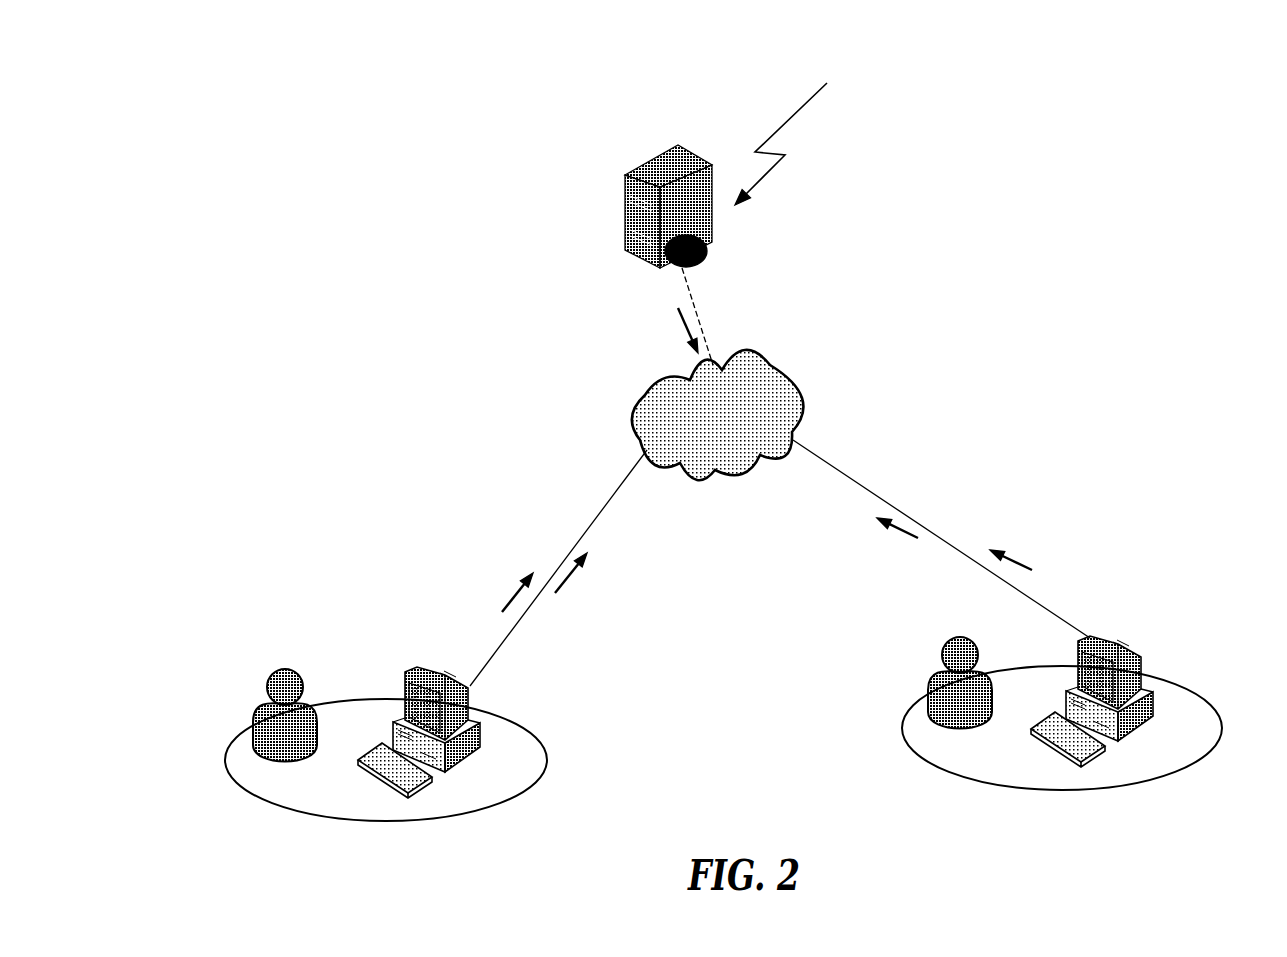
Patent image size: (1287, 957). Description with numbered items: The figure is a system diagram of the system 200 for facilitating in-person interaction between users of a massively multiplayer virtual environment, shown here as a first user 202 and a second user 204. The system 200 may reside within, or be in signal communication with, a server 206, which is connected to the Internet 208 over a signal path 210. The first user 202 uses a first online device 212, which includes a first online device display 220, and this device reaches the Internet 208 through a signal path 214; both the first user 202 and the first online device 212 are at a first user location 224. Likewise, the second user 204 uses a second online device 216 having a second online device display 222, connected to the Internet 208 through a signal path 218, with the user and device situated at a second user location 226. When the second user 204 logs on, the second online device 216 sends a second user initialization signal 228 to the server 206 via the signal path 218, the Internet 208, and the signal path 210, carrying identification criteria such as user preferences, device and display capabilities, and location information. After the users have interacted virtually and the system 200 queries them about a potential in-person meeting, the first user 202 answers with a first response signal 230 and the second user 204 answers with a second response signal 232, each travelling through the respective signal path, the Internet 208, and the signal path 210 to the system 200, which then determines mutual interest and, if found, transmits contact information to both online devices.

The system 200 is at (791, 133).
The first user 202 is at (272, 671).
The second user 204 is at (990, 728).
The server 206 is at (693, 148).
The Internet 208 is at (718, 415).
The signal path 210 is at (697, 289).
The first online device 212 is at (388, 646).
The signal path 214 is at (615, 492).
The second online device 216 is at (1145, 704).
The signal path 218 is at (855, 483).
The first online device display 220 is at (400, 711).
The second online device display 222 is at (1168, 738).
The first user location 224 is at (513, 597).
The second user location 226 is at (1015, 556).
The second user initialization signal 228 is at (683, 325).
The first response signal 230 is at (563, 590).
The second response signal 232 is at (902, 533).